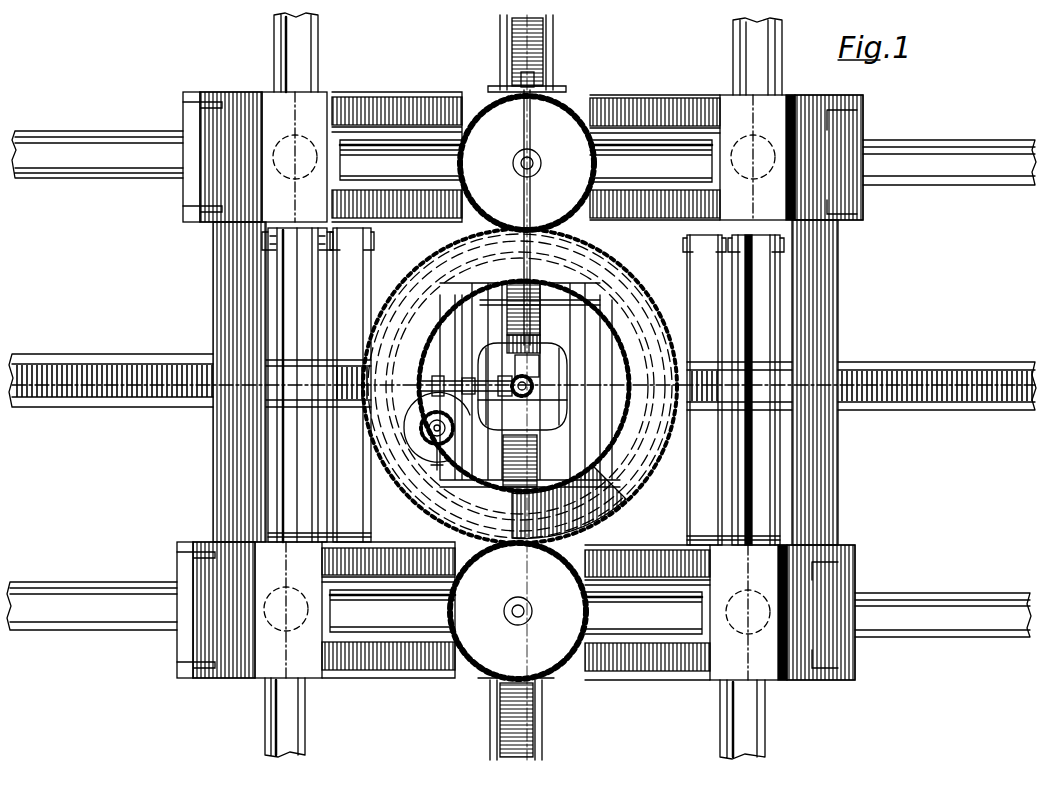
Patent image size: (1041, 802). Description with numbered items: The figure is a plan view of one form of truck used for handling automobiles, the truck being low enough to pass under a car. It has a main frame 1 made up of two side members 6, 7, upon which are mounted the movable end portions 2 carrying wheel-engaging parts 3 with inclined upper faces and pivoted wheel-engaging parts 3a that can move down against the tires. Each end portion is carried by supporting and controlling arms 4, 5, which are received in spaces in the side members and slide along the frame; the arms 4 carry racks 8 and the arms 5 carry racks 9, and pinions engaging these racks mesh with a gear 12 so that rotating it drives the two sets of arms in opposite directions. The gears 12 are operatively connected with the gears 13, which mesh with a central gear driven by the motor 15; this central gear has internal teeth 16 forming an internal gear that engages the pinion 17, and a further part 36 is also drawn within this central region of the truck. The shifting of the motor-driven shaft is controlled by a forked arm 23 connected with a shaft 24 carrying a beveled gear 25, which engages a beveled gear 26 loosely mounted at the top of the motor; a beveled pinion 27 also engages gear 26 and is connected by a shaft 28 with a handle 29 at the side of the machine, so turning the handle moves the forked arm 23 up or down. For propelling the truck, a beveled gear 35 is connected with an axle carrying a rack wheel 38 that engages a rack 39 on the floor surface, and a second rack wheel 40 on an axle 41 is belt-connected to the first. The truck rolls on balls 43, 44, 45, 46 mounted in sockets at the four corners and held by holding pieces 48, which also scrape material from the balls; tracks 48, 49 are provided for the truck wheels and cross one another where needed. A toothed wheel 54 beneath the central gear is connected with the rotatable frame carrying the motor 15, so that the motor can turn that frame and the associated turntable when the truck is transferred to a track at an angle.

The main frame 1 is at (275, 103).
The movable end portions 2 is at (206, 506).
The wheel-engaging parts 3 is at (835, 125).
The pivoted wheel-engaging parts 3a is at (865, 126).
The supporting and controlling arms 4 is at (521, 338).
The supporting and controlling arms 5 is at (478, 750).
The side member 6 is at (172, 397).
The side member 7 is at (153, 602).
The racks 8 is at (308, 47).
The racks 9 is at (435, 469).
The gear 12 is at (530, 362).
The gears 13 is at (547, 112).
The motor 15 is at (562, 363).
The internal teeth 16 is at (428, 345).
The pinion 17 is at (445, 432).
The forked arm 23 is at (440, 400).
The shaft 24 is at (485, 382).
The beveled gear 25 is at (507, 378).
The beveled gear 26 is at (510, 405).
The beveled pinion 27 is at (540, 383).
The shaft 28 is at (541, 92).
The handle 29 is at (521, 72).
The beveled gear 35 is at (380, 321).
The circular track 36 is at (445, 265).
The rack wheel 38 is at (570, 292).
The rack 39 is at (113, 404).
The rack wheel 40 is at (537, 470).
The axle 41 is at (615, 475).
The ball 43 is at (818, 688).
The ball 44 is at (270, 612).
The ball 45 is at (273, 152).
The ball 46 is at (797, 118).
The holding pieces 48 is at (772, 62).
The track 49 is at (962, 180).
The toothed wheel 54 is at (610, 500).